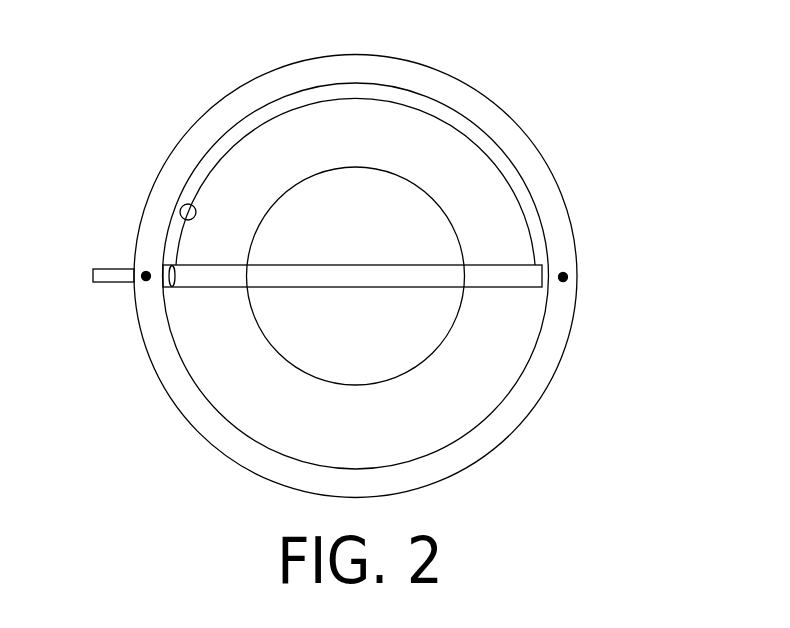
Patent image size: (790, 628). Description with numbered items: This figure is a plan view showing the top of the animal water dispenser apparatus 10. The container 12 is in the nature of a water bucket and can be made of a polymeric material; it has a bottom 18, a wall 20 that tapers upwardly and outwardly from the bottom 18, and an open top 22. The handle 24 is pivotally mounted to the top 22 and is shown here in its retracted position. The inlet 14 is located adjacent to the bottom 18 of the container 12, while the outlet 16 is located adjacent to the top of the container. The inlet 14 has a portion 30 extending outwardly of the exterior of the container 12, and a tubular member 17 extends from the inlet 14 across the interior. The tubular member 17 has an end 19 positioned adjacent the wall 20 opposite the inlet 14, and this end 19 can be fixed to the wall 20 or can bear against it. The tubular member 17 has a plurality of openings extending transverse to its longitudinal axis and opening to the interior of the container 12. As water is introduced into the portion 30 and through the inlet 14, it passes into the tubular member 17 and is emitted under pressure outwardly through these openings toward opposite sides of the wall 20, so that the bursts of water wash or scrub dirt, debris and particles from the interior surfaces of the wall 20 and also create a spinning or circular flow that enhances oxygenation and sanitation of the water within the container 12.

The animal water dispenser apparatus 10 is at (622, 271).
The container 12 is at (477, 388).
The inlet 14 is at (146, 276).
The outlet 16 is at (190, 204).
The tubular member 17 is at (502, 270).
The bottom 18 is at (375, 244).
The end 19 is at (534, 270).
The wall 20 is at (292, 433).
The top 22 is at (553, 358).
The handle 24 is at (520, 140).
The portion 30 is at (100, 266).